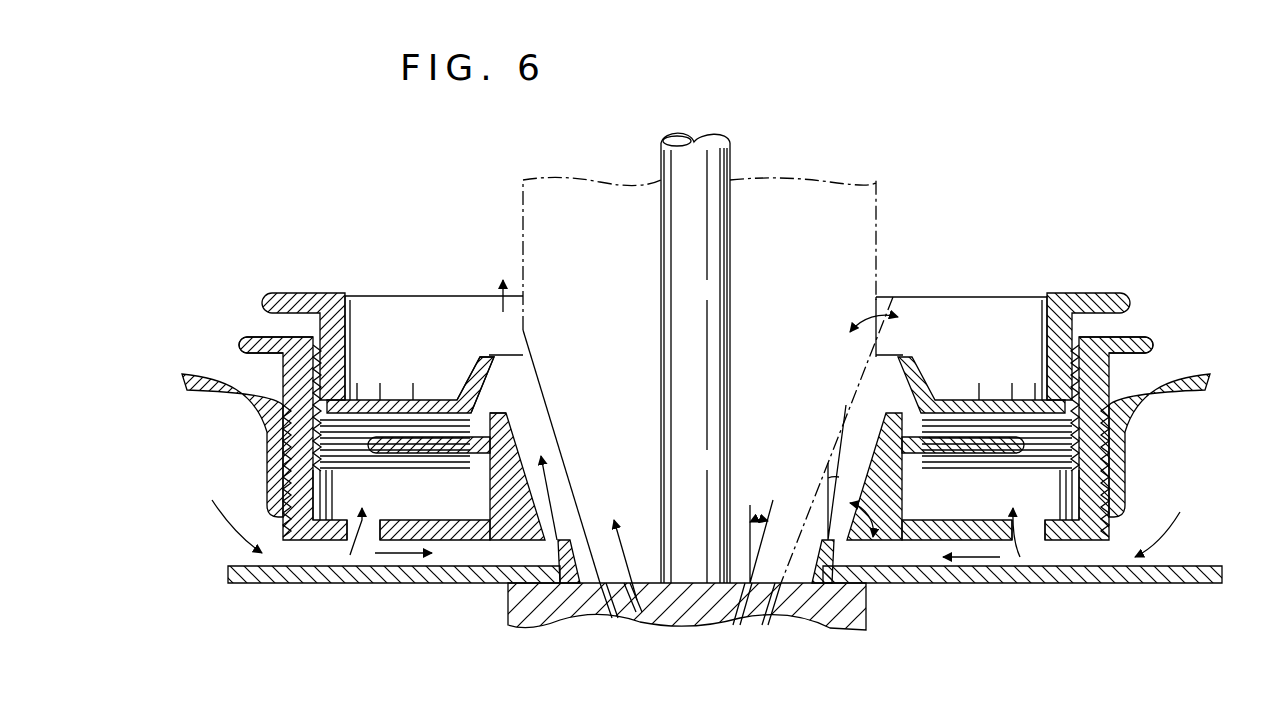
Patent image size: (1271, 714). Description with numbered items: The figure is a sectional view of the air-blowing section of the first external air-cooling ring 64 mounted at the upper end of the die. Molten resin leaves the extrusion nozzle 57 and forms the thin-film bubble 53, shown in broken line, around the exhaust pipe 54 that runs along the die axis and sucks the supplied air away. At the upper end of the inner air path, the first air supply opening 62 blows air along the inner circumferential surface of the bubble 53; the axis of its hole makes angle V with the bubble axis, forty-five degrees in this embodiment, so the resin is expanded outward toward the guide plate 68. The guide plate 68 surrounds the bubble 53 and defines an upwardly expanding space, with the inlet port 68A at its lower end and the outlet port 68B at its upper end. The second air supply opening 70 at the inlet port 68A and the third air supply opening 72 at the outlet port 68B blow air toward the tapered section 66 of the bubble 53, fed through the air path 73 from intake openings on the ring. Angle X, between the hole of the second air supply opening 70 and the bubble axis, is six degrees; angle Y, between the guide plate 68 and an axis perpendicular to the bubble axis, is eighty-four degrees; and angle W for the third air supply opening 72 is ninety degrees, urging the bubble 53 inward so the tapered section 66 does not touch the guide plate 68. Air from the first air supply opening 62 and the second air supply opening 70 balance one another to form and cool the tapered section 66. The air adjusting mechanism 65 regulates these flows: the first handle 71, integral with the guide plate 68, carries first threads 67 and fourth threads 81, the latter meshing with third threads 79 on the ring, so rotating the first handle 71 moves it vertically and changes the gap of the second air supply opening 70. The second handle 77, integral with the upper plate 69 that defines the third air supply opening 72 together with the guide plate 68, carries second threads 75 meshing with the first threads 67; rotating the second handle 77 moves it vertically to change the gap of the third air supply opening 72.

The bubble 53 is at (884, 236).
The exhaust pipe 54 is at (712, 210).
The extrusion nozzle 57 is at (606, 610).
The first air supply opening 62 is at (645, 607).
The first external air-cooling ring 64 is at (446, 255).
The air adjusting mechanism 65 is at (217, 360).
The tapered section 66 is at (558, 432).
The first threads 67 is at (326, 463).
The guide plate 68 is at (522, 480).
The inlet port 68A is at (553, 540).
The outlet port 68B is at (476, 408).
The upper plate 69 is at (407, 400).
The second air supply opening 70 is at (520, 590).
The first handle 71 is at (262, 338).
The third air supply opening 72 is at (489, 390).
The air path 73 is at (370, 535).
The second threads 75 is at (320, 378).
The second handle 77 is at (298, 293).
The third threads 79 is at (283, 476).
The fourth threads 81 is at (284, 418).
The angle V is at (760, 512).
The angle W is at (866, 326).
The angle X is at (841, 470).
The angle Y is at (878, 536).